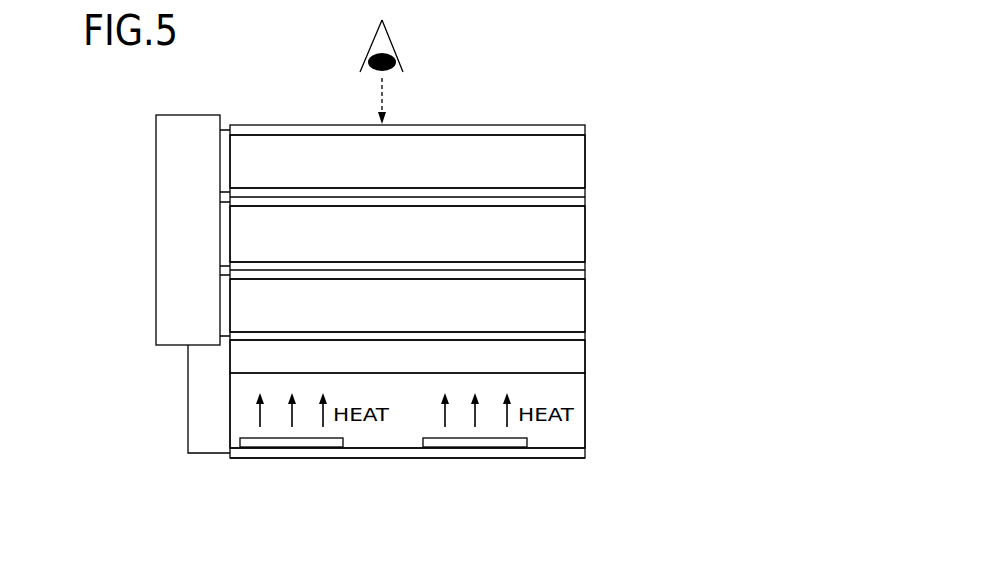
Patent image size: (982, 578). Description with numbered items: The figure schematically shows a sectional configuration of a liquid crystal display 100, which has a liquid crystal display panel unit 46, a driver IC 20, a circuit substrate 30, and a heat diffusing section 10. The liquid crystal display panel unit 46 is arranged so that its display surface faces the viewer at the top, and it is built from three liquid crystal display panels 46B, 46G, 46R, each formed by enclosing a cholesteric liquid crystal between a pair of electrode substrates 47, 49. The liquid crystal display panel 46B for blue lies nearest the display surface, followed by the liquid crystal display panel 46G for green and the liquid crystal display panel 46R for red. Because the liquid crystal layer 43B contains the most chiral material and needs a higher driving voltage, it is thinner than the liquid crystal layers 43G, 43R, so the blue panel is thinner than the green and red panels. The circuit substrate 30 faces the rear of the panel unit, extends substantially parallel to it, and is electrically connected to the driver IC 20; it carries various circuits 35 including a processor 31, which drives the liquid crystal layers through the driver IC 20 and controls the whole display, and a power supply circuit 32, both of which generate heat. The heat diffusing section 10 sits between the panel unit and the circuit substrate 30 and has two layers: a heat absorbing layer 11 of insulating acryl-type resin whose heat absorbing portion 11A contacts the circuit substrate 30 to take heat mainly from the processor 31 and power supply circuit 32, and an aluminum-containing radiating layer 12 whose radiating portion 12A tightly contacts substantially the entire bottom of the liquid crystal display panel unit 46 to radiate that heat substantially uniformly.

The liquid crystal display 100 is at (556, 88).
The driver IC 20 is at (163, 260).
The electrode substrate 47 is at (585, 127).
The electrode substrate 49 is at (585, 190).
The liquid crystal layer 43B is at (577, 155).
The liquid crystal layer 43G is at (577, 228).
The liquid crystal layer 43R is at (577, 303).
The liquid crystal display panel 46B is at (683, 156).
The liquid crystal display panel 46G is at (683, 229).
The liquid crystal display panel 46R is at (683, 304).
The liquid crystal display panel unit 46 is at (776, 140).
The radiating layer 12 is at (577, 357).
The radiating portion 12A is at (412, 345).
The heat diffusing section 10 is at (600, 401).
The heat absorbing layer 11 is at (577, 430).
The heat absorbing portion 11A is at (325, 433).
The circuit substrate 30 is at (378, 460).
The processor 31 is at (272, 448).
The power supply circuit 32 is at (497, 448).
The circuits 35 is at (540, 438).